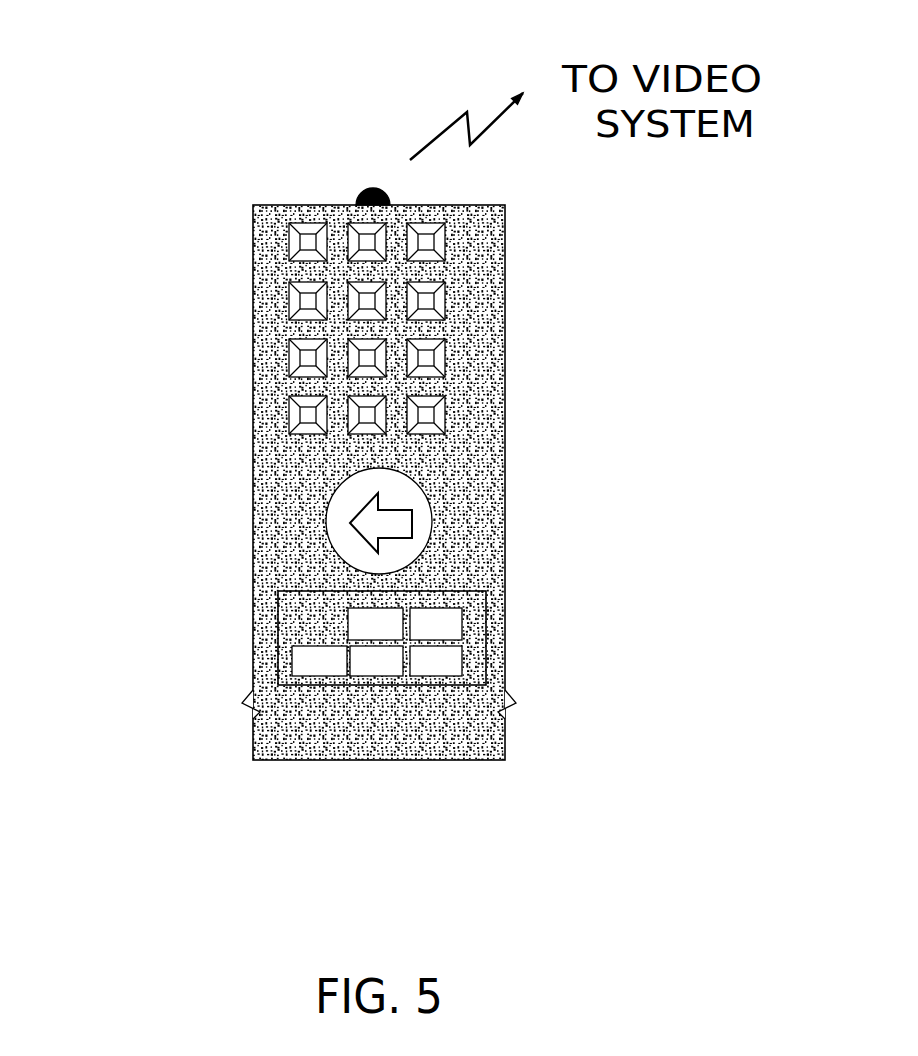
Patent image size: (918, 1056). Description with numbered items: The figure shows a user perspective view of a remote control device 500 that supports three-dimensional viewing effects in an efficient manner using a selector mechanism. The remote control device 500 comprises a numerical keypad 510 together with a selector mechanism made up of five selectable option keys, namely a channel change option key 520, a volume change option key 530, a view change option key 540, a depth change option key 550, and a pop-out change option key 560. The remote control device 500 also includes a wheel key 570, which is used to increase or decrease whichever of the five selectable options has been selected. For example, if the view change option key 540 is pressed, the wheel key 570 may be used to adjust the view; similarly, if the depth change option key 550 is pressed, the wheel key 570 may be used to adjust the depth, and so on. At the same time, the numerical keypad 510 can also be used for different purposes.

The remote control device 500 is at (407, 42).
The numerical keypad 510 is at (280, 225).
The channel change option key 520 is at (352, 620).
The volume change option key 530 is at (313, 675).
The view change option key 540 is at (467, 617).
The depth change option key 550 is at (372, 675).
The pop-out change option key 560 is at (440, 675).
The wheel key 570 is at (432, 523).